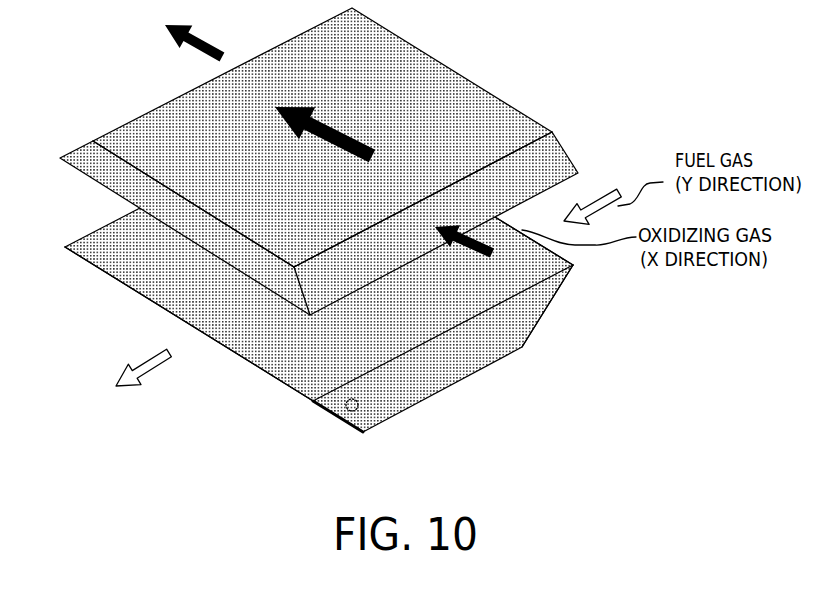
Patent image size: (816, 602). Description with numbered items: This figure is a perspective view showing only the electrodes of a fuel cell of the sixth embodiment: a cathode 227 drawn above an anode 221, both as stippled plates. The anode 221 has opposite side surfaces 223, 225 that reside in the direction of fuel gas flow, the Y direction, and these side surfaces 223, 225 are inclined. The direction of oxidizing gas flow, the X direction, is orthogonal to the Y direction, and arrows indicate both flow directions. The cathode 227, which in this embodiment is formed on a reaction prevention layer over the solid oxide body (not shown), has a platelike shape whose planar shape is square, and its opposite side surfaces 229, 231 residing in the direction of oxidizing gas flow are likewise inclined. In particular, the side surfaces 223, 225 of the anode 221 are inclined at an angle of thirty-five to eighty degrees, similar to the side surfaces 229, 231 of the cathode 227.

The anode 221 is at (463, 355).
The side surface of the anode 223 is at (547, 307).
The side surface of the anode 225 is at (293, 387).
The cathode 227 is at (465, 92).
The side surface of the cathode 229 is at (566, 151).
The side surface of the cathode 231 is at (83, 148).